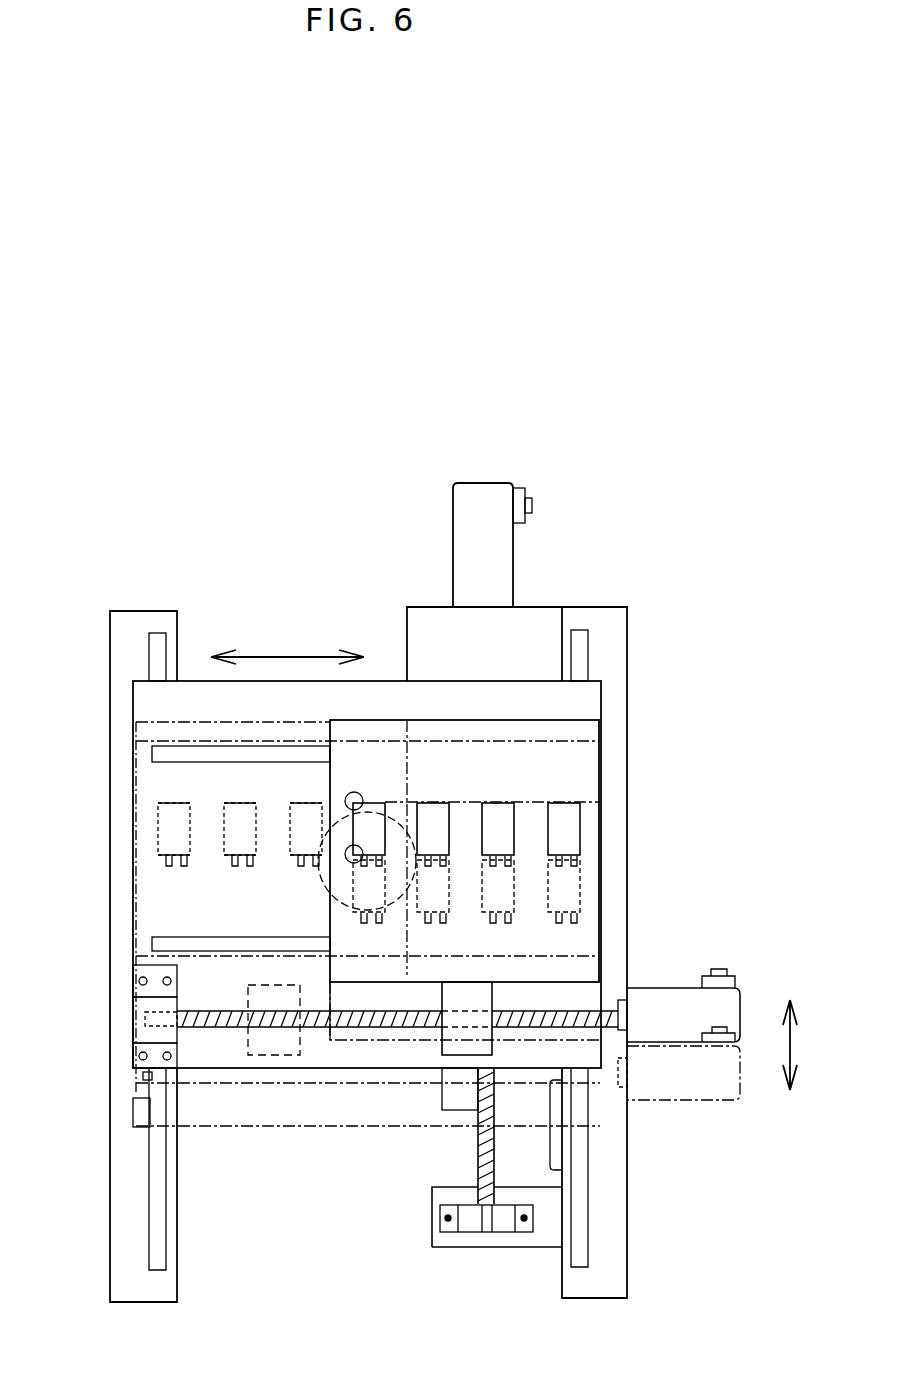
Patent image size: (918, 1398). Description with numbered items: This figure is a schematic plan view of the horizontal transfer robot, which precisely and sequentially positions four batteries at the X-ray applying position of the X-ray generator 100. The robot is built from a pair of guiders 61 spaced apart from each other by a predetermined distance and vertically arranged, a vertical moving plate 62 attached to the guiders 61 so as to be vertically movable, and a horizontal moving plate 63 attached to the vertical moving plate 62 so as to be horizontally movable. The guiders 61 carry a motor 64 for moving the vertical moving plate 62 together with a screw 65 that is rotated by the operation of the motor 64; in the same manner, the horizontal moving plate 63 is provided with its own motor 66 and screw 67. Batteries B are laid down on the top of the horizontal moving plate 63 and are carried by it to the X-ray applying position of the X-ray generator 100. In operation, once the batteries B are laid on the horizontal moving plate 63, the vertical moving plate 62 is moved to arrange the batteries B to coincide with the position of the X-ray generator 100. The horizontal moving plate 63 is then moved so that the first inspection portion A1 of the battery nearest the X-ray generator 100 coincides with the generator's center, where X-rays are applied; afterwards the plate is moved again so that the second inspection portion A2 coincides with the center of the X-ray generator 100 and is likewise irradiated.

The guiders 61 is at (570, 1287).
The vertical moving plate 62 is at (590, 695).
The horizontal moving plate 63 is at (590, 738).
The motor 64 is at (483, 500).
The screw 65 is at (478, 1158).
The motor 66 is at (740, 996).
The screw 67 is at (228, 1027).
The X-ray generator 100 is at (318, 882).
The first inspection portion A1 is at (345, 854).
The second inspection portion A2 is at (345, 799).
The batteries B is at (578, 830).